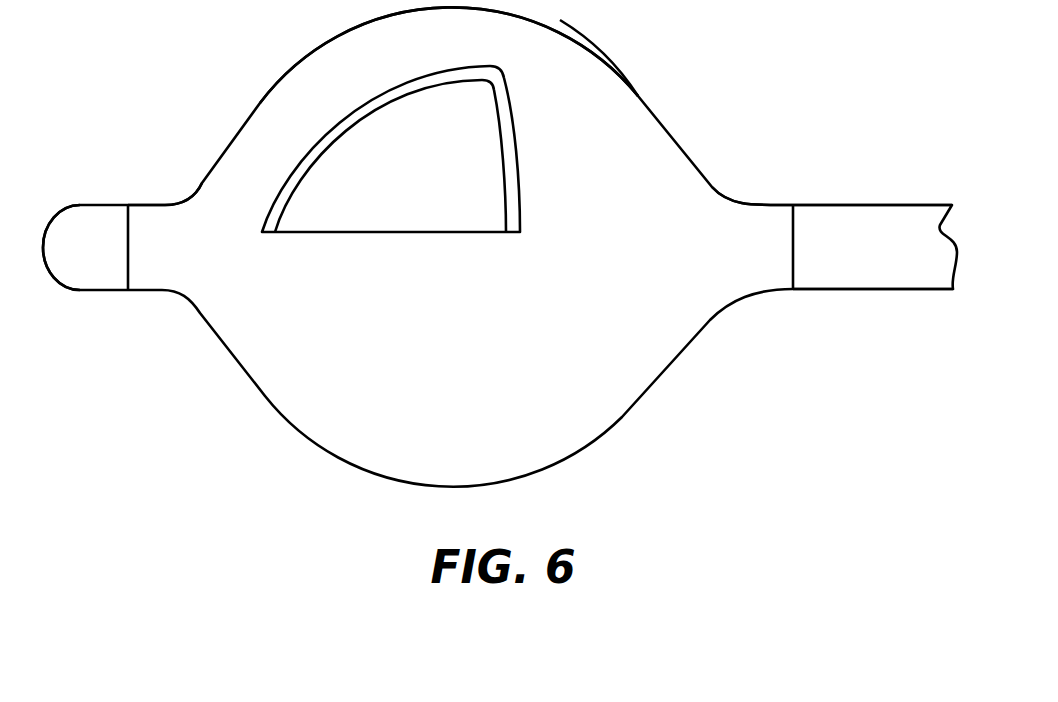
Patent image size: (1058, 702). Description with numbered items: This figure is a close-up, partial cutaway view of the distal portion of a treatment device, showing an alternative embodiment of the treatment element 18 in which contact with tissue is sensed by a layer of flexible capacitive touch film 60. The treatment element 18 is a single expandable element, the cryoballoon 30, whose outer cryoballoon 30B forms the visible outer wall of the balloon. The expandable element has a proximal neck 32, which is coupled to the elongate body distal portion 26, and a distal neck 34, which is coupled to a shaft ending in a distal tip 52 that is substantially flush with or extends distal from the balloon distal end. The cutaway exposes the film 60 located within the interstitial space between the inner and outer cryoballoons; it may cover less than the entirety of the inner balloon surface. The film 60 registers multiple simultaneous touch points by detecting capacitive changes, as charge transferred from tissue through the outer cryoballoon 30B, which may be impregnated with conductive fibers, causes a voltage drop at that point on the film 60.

The treatment element 18 is at (248, 409).
The elongate body distal portion 26 is at (903, 205).
The cryoballoon 30 is at (283, 74).
The outer cryoballoon 30B is at (622, 82).
The proximal neck 32 is at (758, 195).
The distal neck 34 is at (157, 204).
The distal tip 52 is at (75, 262).
The flexible capacitive touch film 60 is at (432, 210).